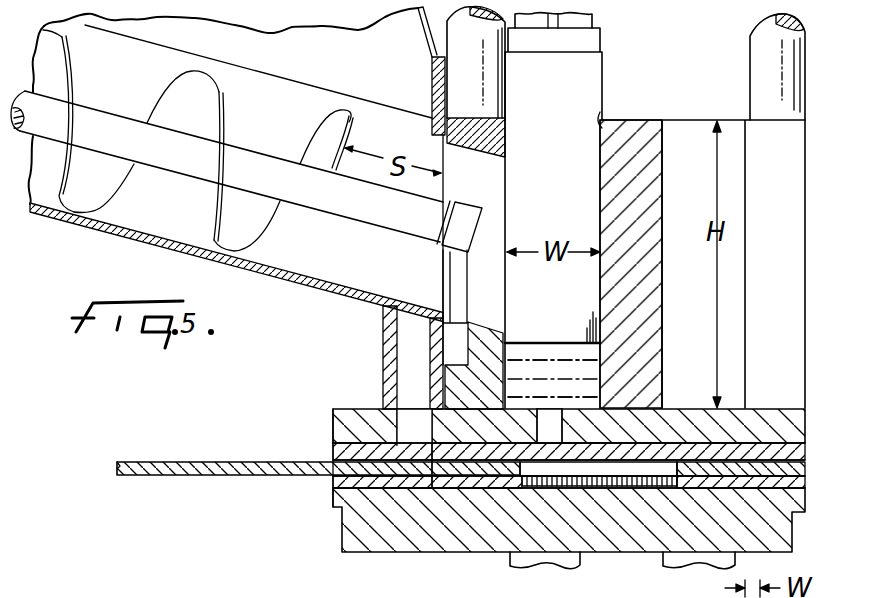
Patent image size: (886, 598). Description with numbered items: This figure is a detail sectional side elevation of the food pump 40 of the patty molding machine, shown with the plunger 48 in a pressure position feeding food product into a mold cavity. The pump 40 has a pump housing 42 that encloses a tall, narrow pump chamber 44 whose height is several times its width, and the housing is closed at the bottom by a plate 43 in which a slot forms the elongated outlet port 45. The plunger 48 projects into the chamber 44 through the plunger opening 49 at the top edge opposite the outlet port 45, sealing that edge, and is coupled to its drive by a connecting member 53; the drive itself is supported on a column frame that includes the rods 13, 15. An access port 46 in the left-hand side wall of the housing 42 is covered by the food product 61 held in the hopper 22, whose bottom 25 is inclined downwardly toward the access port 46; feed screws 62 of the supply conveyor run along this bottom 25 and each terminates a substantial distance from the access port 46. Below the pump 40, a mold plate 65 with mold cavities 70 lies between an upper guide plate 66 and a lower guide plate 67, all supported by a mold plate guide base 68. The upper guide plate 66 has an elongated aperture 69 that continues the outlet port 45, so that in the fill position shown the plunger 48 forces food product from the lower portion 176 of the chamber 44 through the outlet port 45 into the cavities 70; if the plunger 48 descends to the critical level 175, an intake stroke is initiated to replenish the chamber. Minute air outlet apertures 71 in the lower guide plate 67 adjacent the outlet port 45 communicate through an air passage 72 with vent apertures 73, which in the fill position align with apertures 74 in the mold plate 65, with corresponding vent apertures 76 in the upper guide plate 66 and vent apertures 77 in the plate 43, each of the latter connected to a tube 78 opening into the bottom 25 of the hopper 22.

The hopper 22 is at (296, 28).
The rod 13 is at (484, 72).
The connecting member 53 is at (592, 20).
The plunger 48 is at (598, 72).
The plunger opening 49 is at (600, 112).
The food pump 40 is at (652, 108).
The rod 15 is at (795, 70).
The access port 46 is at (500, 170).
The pump chamber 44 is at (600, 235).
The pump housing 42 is at (650, 284).
The outlet port 45 is at (553, 415).
The lower portion of chamber 176 is at (588, 353).
The critical level 175 is at (583, 400).
The mold cavities 70 is at (642, 468).
The plate 43 is at (798, 430).
The mold plate guide base 68 is at (783, 527).
The air outlet apertures 71 is at (633, 487).
The elongated aperture 69 is at (555, 457).
The air passage 72 is at (480, 480).
The vent apertures 73 is at (421, 462).
The apertures 74 is at (417, 470).
The lower guide plate 67 is at (330, 485).
The mold plate 65 is at (203, 477).
The upper guide plate 66 is at (330, 448).
The vent apertures 76 is at (385, 430).
The vent apertures 77 is at (398, 410).
The tube 78 is at (383, 335).
The food product 61 is at (338, 270).
The hopper bottom 25 is at (167, 250).
The feed screws 62 is at (97, 222).